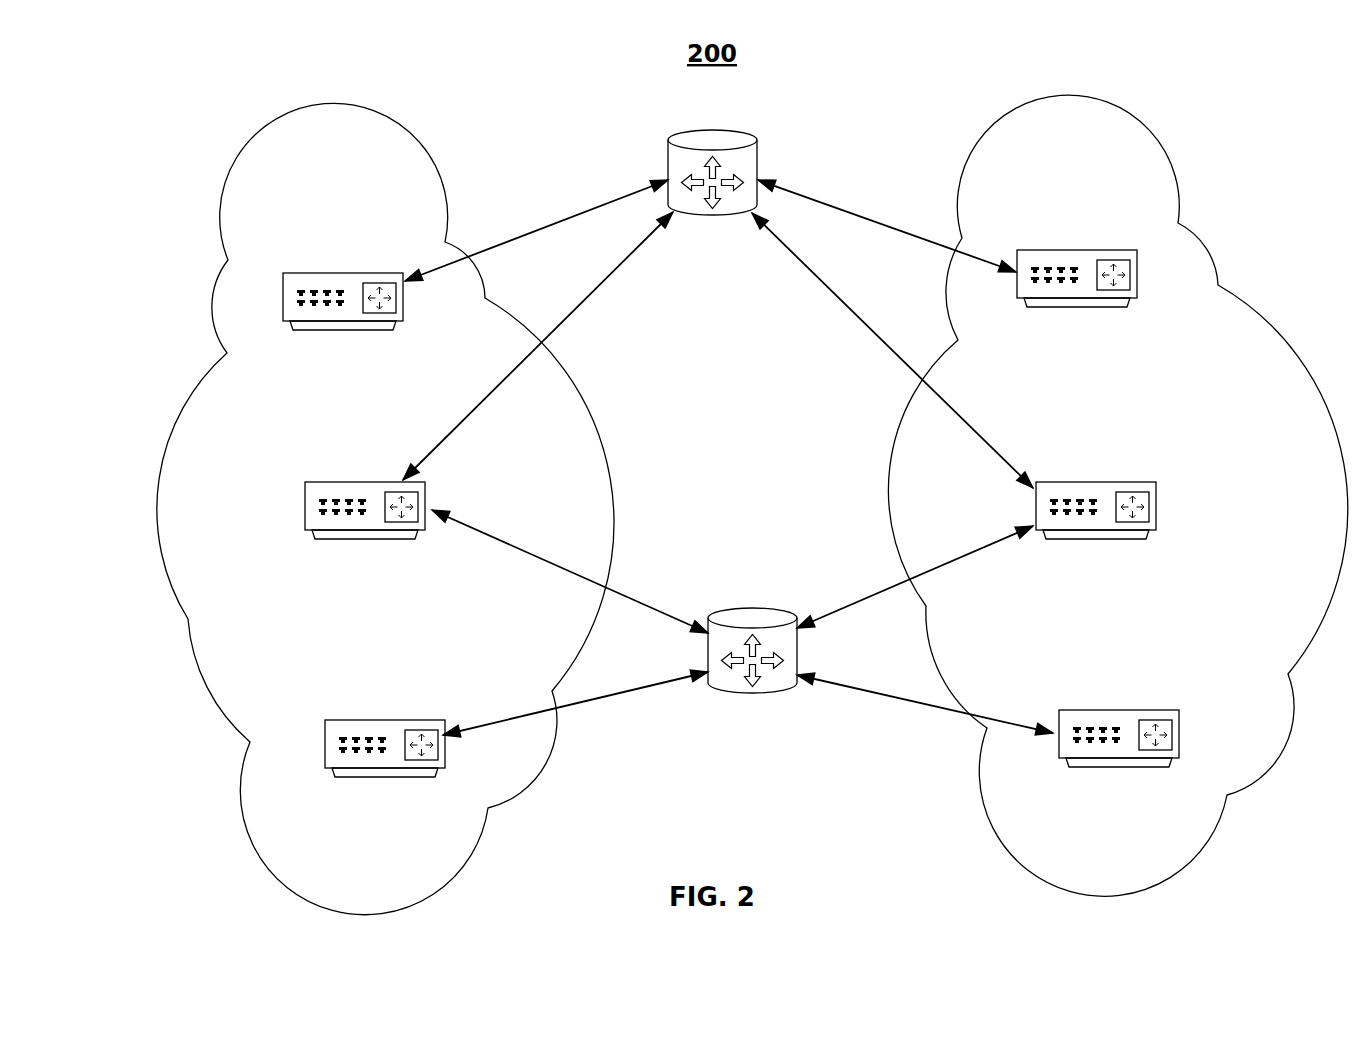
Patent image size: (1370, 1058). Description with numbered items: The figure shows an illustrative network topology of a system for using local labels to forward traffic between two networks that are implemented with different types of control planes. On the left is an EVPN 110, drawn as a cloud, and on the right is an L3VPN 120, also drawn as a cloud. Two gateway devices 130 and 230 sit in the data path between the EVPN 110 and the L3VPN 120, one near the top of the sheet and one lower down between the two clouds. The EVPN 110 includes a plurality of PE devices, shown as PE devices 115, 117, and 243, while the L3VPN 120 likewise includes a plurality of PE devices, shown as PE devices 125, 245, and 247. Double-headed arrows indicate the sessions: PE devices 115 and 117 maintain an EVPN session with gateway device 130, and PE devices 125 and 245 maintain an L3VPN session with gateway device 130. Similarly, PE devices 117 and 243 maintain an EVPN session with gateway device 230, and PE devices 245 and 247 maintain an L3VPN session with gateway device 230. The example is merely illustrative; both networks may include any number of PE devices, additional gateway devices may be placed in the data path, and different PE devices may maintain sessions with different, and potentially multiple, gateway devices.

The EVPN 110 is at (385, 533).
The L3VPN 120 is at (1117, 523).
The gateway device 130 is at (750, 163).
The gateway device 230 is at (755, 608).
The PE device 115 is at (358, 273).
The PE device 117 is at (345, 482).
The PE device 243 is at (385, 725).
The PE device 125 is at (1050, 255).
The PE device 245 is at (1072, 492).
The PE device 247 is at (1105, 717).